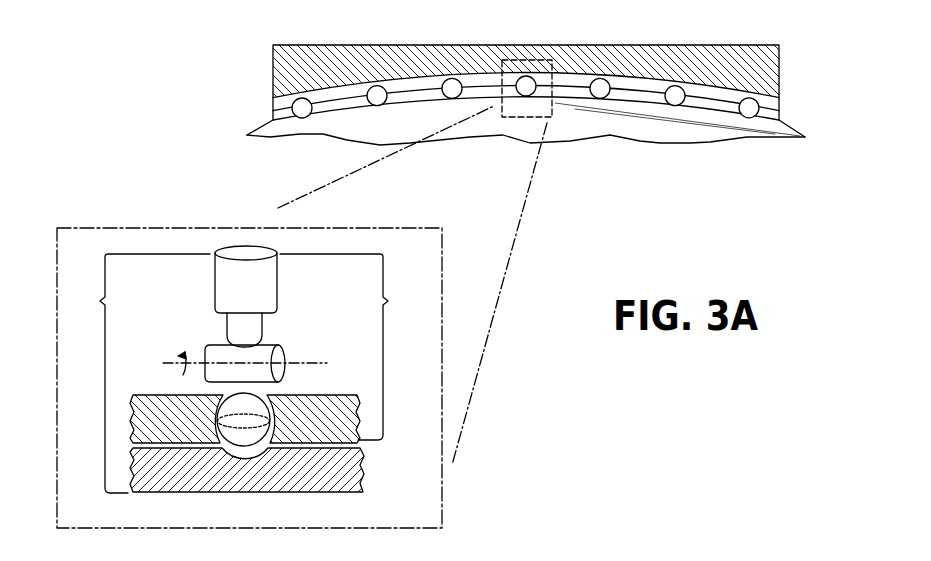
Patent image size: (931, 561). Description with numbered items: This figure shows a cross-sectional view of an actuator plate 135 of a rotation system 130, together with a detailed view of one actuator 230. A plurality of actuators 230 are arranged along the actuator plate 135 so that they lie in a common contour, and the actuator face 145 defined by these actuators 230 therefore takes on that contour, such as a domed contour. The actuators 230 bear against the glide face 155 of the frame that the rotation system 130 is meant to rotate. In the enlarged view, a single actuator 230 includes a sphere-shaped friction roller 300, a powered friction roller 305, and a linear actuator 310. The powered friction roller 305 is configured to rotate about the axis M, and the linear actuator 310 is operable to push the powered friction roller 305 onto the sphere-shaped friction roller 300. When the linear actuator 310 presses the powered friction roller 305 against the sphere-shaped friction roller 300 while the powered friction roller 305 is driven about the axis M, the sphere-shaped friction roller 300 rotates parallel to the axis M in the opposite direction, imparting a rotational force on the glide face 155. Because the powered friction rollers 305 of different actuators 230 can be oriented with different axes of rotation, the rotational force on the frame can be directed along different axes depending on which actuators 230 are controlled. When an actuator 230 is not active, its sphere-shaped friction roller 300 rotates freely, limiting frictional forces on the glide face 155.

The actuator plate 135 is at (795, 78).
The glide face 155 is at (270, 127).
The actuator 230 is at (452, 90).
The rotation system 130 is at (138, 373).
The linear actuator 310 is at (273, 286).
The powered friction roller 305 is at (283, 347).
The sphere-shaped friction roller 300 is at (242, 438).
The actuator face 145 is at (274, 440).
The axis M is at (166, 362).